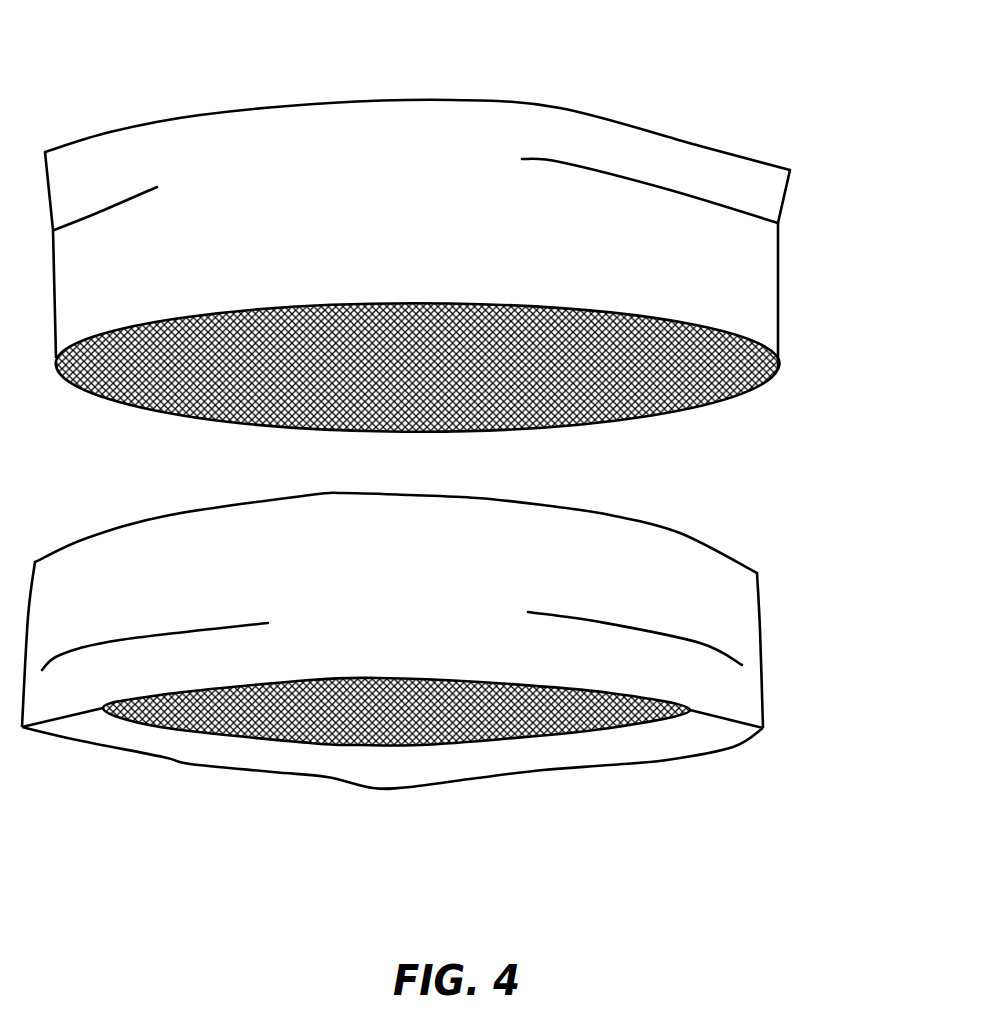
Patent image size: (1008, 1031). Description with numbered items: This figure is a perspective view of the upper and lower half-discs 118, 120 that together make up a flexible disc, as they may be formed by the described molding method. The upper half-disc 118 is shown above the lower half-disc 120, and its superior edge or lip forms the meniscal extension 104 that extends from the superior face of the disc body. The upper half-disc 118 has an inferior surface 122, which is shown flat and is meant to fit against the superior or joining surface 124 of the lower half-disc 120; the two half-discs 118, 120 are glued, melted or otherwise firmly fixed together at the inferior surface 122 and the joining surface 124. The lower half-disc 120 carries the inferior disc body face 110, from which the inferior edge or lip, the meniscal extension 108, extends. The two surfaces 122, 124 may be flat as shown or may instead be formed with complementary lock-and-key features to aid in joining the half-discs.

The superior meniscal extension 104 is at (137, 153).
The upper half-disc 118 is at (727, 254).
The inferior surface 122 is at (155, 405).
The joining surface 124 is at (683, 533).
The lower half-disc 120 is at (740, 602).
The inferior meniscal extension 108 is at (390, 764).
The inferior disc body face 110 is at (503, 742).